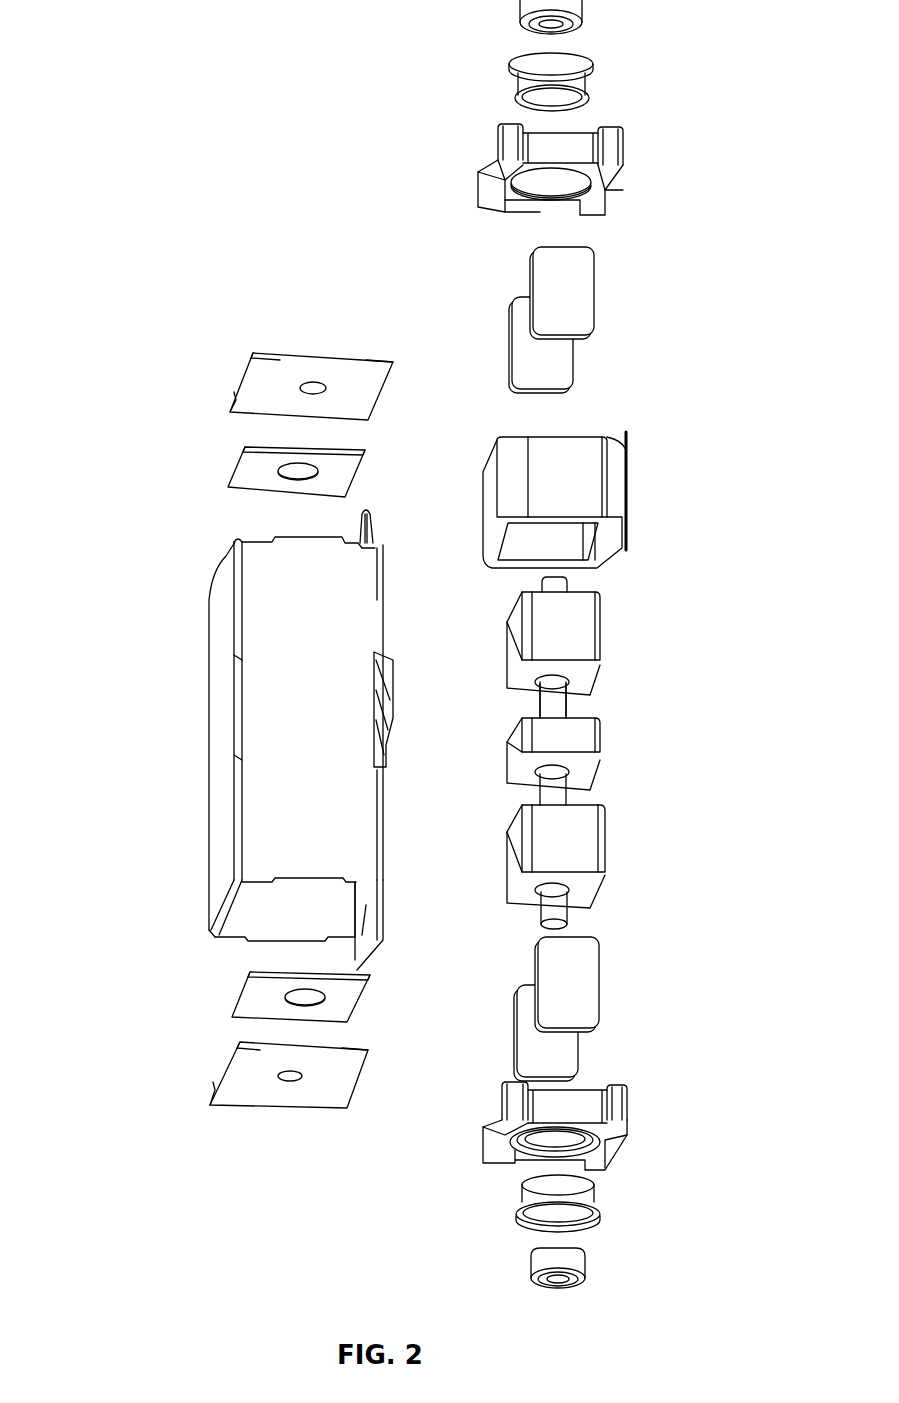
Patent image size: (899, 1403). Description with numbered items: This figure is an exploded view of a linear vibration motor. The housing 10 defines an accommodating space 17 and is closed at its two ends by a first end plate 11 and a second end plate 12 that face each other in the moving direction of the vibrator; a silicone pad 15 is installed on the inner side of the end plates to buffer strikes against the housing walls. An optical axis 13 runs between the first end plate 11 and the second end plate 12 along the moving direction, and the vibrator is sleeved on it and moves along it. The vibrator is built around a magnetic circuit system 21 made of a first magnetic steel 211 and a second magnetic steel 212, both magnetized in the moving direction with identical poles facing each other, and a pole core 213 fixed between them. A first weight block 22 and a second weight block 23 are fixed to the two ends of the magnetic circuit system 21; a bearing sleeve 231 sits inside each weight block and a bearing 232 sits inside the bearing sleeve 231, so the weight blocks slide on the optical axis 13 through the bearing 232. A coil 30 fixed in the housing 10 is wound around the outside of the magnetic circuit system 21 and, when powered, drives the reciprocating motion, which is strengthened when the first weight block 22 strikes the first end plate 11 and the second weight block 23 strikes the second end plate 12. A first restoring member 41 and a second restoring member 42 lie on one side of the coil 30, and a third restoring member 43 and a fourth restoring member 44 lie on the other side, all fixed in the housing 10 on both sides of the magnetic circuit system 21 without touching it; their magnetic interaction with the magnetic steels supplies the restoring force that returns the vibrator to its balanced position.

The housing 10 is at (100, 325).
The first end plate 11 is at (263, 1073).
The second end plate 12 is at (290, 383).
The optical axis 13 is at (560, 697).
The silicone pad 15 is at (258, 472).
The accommodating space 17 is at (290, 907).
The magnetic circuit system 21 is at (778, 575).
The first weight block 22 is at (562, 1097).
The second weight block 23 is at (622, 163).
The coil 30 is at (577, 481).
The first restoring member 41 is at (556, 973).
The second restoring member 42 is at (556, 1047).
The third restoring member 43 is at (568, 292).
The fourth restoring member 44 is at (548, 365).
The first magnetic steel 211 is at (558, 838).
The second magnetic steel 212 is at (560, 630).
The pole core 213 is at (558, 733).
The bearing sleeve 231 is at (560, 1190).
The bearing 232 is at (557, 1257).